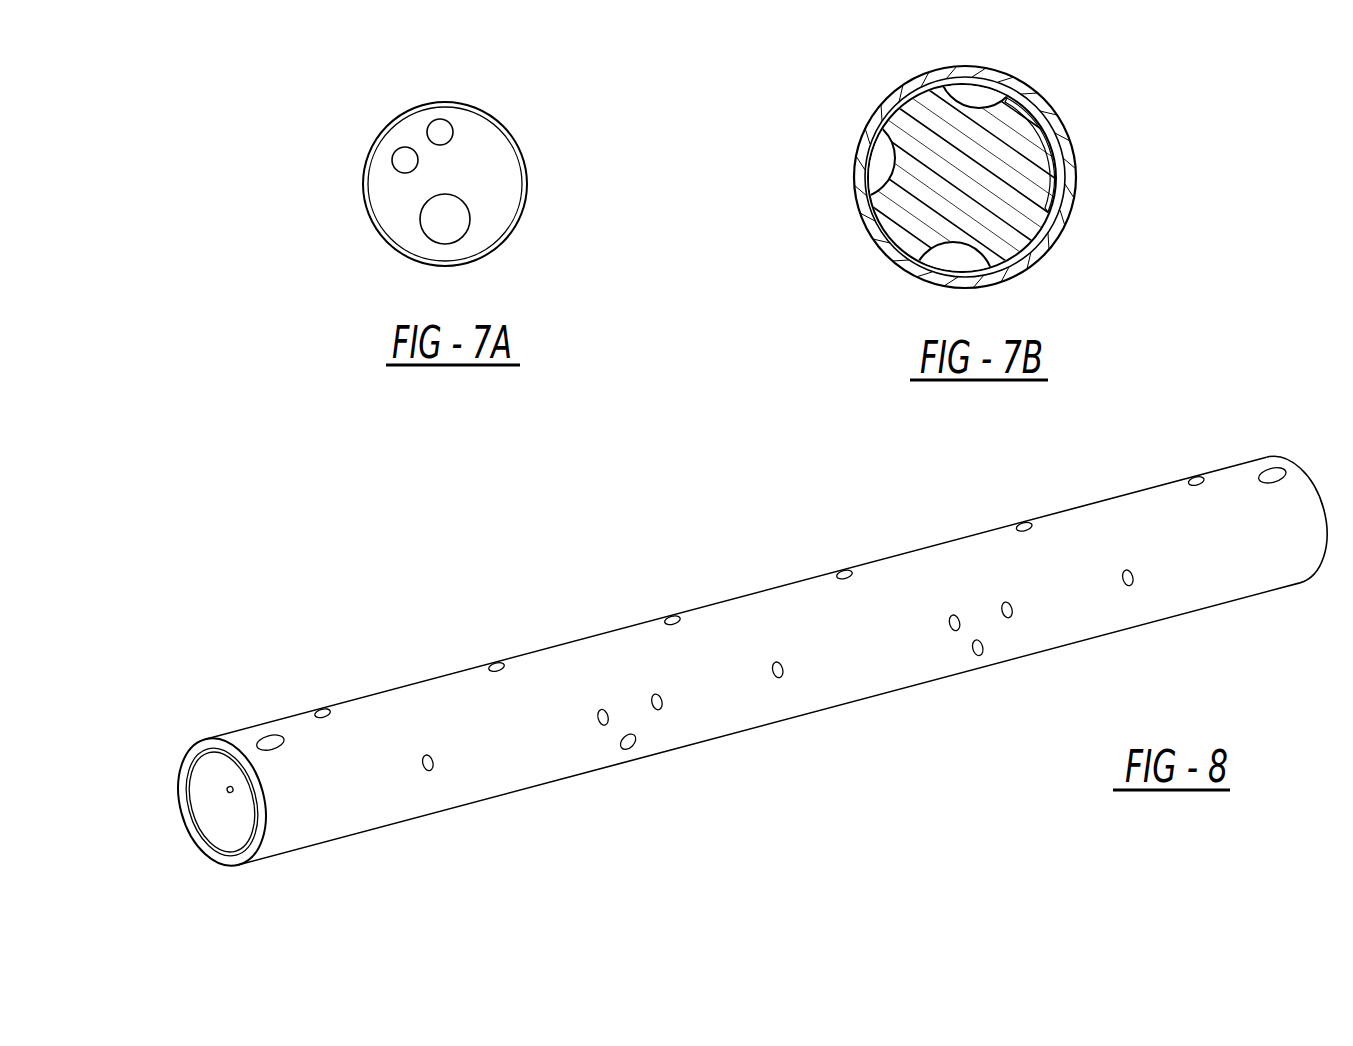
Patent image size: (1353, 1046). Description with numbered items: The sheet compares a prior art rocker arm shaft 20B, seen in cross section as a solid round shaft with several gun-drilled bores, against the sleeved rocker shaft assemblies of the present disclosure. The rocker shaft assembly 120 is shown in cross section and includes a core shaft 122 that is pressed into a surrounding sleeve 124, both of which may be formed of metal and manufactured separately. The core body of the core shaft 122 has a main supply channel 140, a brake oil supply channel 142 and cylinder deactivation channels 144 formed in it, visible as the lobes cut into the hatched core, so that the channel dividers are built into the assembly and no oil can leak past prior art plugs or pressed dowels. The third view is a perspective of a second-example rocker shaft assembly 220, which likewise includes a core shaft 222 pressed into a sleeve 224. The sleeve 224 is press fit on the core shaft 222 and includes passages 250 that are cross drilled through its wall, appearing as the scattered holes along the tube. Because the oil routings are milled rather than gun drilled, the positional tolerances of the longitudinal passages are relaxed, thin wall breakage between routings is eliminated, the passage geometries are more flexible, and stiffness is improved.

In FIG. 7A, the prior art rocker arm shaft 20B is at (392, 195).
In FIG. 7B, the rocker shaft assembly 120 is at (1024, 175).
In FIG. 7B, the core shaft 122 is at (1018, 163).
In FIG. 7B, the sleeve 124 is at (1055, 237).
In FIG. 7B, the main supply channel 140 is at (883, 155).
In FIG. 7B, the brake oil supply channel 142 is at (987, 92).
In FIG. 7B, the cylinder deactivation channels 144 is at (943, 258).
In FIG. 8, the rocker shaft assembly 220 is at (742, 667).
In FIG. 8, the core shaft 222 is at (228, 815).
In FIG. 8, the sleeve 224 is at (295, 723).
In FIG. 8, the passages 250 is at (1007, 618).